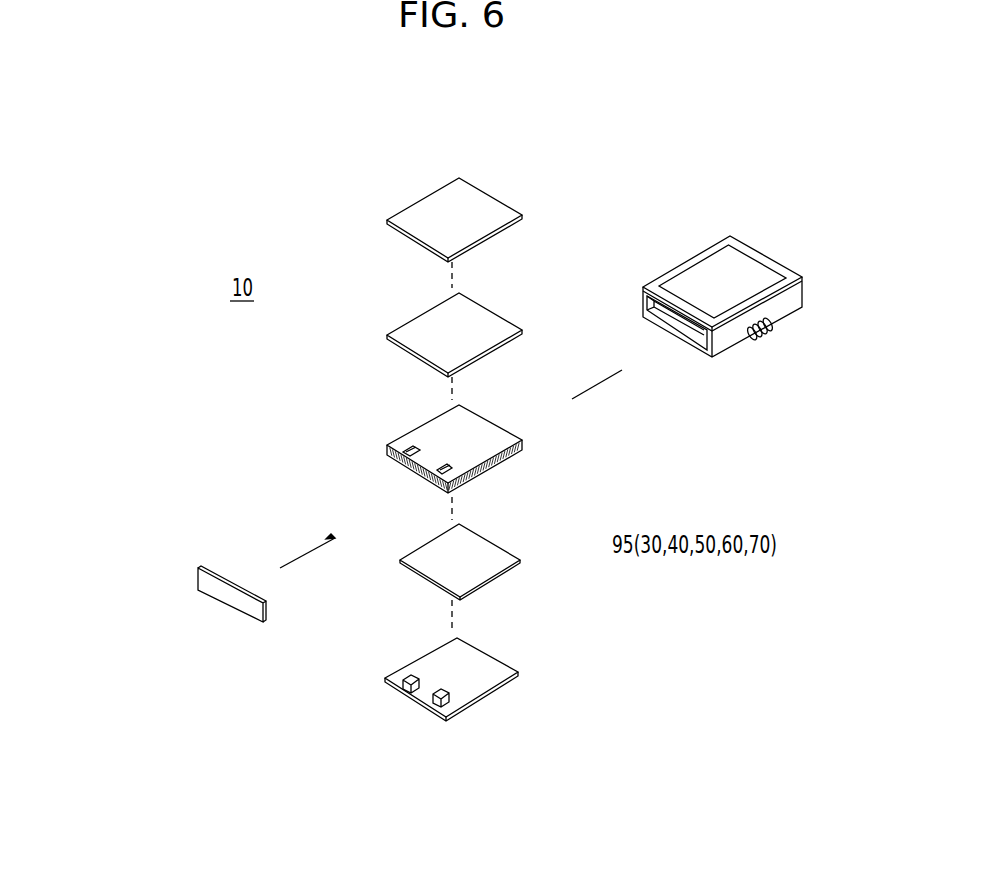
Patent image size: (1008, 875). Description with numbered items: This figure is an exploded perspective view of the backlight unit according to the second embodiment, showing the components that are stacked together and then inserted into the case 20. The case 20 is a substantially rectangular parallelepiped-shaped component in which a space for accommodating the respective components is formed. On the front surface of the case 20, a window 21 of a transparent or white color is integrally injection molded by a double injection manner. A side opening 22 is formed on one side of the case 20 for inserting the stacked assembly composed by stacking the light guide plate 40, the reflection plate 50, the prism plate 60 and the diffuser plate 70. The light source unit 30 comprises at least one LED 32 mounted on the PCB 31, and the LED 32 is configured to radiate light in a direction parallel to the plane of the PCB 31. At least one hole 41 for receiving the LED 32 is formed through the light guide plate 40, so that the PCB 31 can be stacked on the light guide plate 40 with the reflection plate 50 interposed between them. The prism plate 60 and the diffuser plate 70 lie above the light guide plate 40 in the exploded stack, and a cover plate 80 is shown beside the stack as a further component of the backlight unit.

The case 20 is at (738, 308).
The window 21 is at (748, 268).
The side opening 22 is at (695, 338).
The light source unit 30 is at (429, 658).
The PCB 31 is at (477, 663).
The LED 32 is at (432, 697).
The light guide plate 40 is at (434, 434).
The hole 41 is at (430, 468).
The reflection plate 50 is at (478, 552).
The prism plate 60 is at (480, 320).
The diffuser plate 70 is at (480, 205).
The cover plate 80 is at (233, 600).